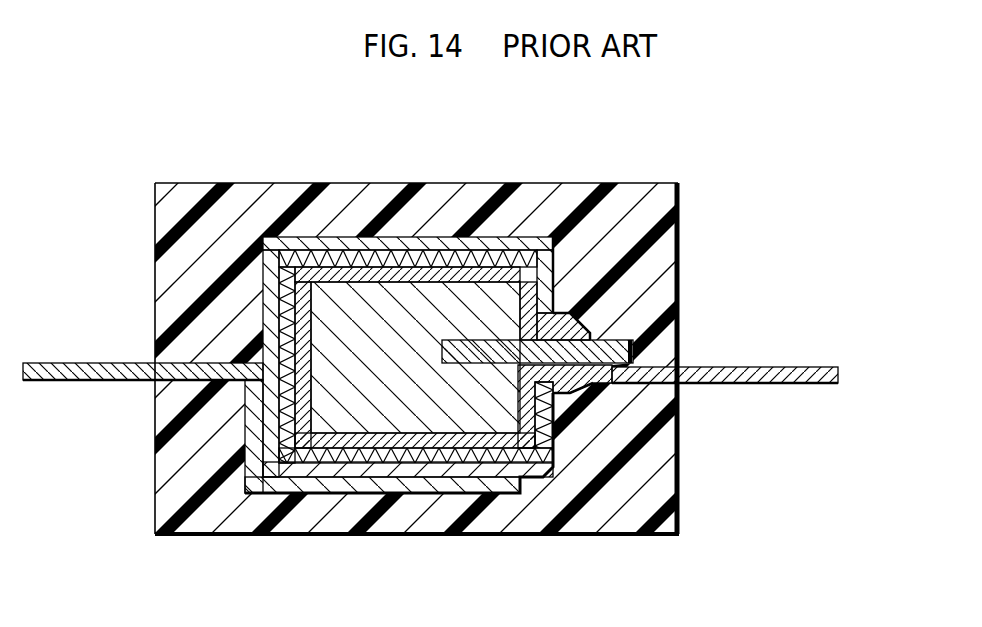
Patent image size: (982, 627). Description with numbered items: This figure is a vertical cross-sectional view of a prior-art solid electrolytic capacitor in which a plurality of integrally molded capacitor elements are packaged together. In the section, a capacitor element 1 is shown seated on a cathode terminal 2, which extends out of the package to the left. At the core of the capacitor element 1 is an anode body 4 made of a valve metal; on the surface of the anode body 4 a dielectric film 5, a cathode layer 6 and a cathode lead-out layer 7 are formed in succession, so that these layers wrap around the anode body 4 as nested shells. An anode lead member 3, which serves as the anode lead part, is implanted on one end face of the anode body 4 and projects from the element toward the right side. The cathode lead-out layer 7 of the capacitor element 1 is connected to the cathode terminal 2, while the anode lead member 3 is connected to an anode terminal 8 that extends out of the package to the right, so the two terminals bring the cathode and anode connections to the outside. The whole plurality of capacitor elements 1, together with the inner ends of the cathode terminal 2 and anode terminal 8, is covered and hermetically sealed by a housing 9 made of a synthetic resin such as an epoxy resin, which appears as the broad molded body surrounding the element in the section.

The capacitor element 1 is at (427, 233).
The cathode terminal 2 is at (88, 362).
The anode lead member 3 is at (634, 351).
The anode body 4 is at (418, 415).
The dielectric film 5 is at (478, 440).
The cathode layer 6 is at (362, 458).
The cathode lead-out layer 7 is at (306, 470).
The anode terminal 8 is at (785, 367).
The housing 9 is at (624, 197).